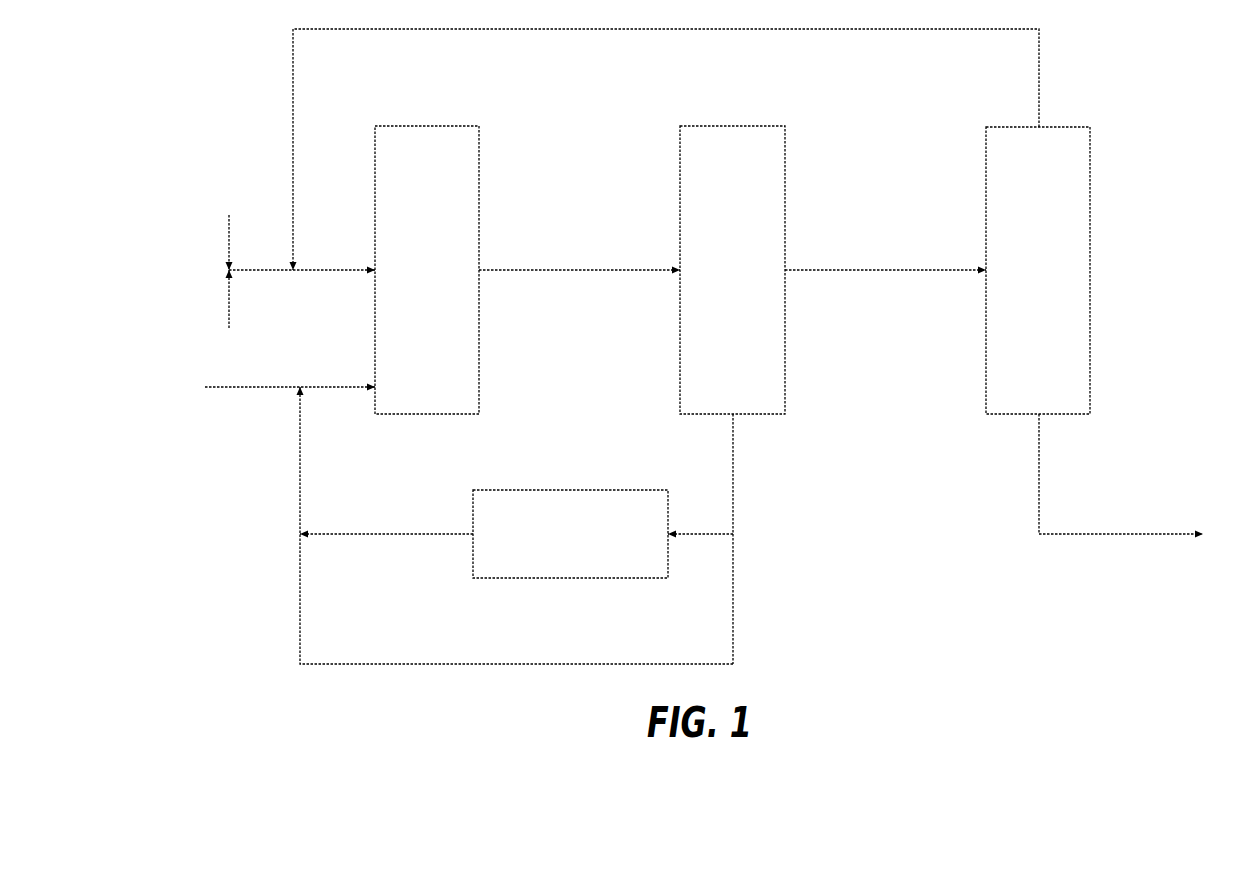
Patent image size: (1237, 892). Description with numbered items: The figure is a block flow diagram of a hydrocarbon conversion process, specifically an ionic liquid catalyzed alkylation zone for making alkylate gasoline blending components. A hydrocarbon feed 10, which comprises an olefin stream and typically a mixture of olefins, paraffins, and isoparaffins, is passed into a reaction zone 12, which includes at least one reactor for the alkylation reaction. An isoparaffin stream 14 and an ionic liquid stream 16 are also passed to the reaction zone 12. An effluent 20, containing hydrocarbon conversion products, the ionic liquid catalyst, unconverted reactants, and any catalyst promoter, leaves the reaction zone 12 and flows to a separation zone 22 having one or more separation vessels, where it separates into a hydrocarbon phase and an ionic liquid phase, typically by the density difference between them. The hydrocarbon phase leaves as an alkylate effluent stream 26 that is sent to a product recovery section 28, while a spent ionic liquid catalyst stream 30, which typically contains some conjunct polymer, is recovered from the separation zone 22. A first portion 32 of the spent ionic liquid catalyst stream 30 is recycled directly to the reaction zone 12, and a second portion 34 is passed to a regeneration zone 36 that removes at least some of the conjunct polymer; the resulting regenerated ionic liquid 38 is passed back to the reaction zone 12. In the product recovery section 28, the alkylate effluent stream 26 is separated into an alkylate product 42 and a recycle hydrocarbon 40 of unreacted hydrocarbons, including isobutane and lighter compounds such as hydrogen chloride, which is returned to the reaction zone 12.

The hydrocarbon feed 10 is at (295, 231).
The reaction zone 12 is at (427, 270).
The isoparaffin stream 14 is at (228, 314).
The ionic liquid stream 16 is at (272, 388).
The effluent 20 is at (579, 258).
The separation zone 22 is at (732, 270).
The alkylate effluent stream 26 is at (885, 259).
The product recovery section 28 is at (1038, 270).
The spent ionic liquid catalyst stream 30 is at (748, 539).
The first portion of the spent ionic liquid catalyst stream 32 is at (515, 525).
The second portion of the spent ionic liquid catalyst stream 34 is at (700, 523).
The regeneration zone 36 is at (570, 534).
The regenerated ionic liquid 38 is at (386, 523).
The recycle hydrocarbon 40 is at (665, 136).
The alkylate product 42 is at (1136, 480).